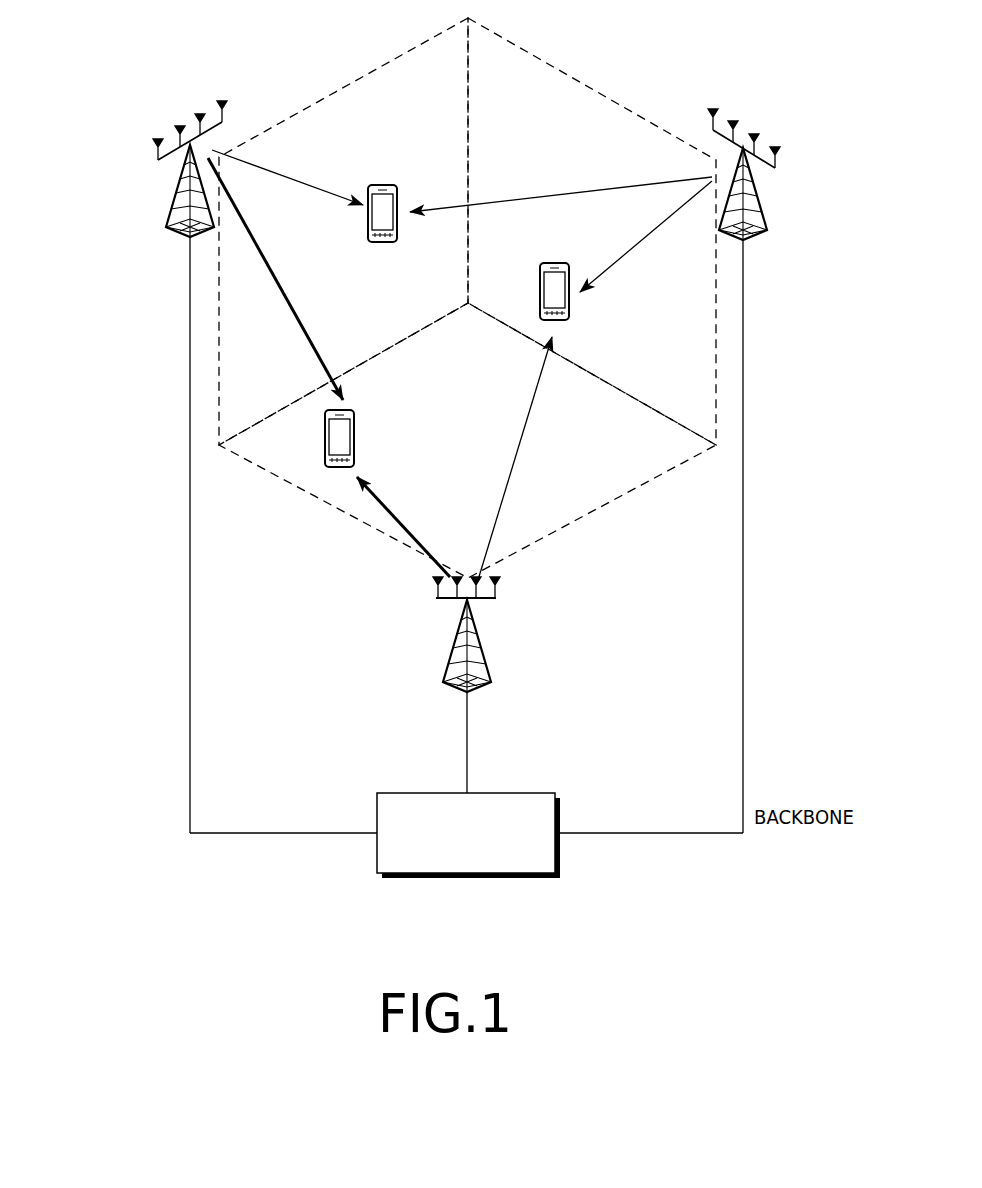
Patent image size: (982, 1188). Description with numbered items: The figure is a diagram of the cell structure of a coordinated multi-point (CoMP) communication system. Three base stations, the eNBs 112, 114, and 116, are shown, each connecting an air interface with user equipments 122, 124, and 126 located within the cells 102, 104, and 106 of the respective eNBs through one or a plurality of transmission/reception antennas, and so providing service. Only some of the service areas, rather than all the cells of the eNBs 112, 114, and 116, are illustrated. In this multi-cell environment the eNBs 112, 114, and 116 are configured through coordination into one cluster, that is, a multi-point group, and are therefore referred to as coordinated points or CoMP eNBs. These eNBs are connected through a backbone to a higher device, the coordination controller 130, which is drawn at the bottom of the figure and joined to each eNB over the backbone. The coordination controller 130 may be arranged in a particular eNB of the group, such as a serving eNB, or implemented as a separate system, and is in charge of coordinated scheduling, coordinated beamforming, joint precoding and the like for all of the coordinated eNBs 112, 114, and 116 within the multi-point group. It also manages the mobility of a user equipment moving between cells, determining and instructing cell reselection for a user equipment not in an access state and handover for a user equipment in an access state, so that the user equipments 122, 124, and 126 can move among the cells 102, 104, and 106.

The cell 102 is at (594, 517).
The cell 104 is at (590, 87).
The cell 106 is at (342, 87).
The eNB 112 is at (490, 636).
The eNB 114 is at (814, 258).
The eNB 116 is at (114, 256).
The user equipment 122 is at (356, 441).
The user equipment 124 is at (553, 261).
The user equipment 126 is at (381, 183).
The coordination controller 130 is at (511, 790).